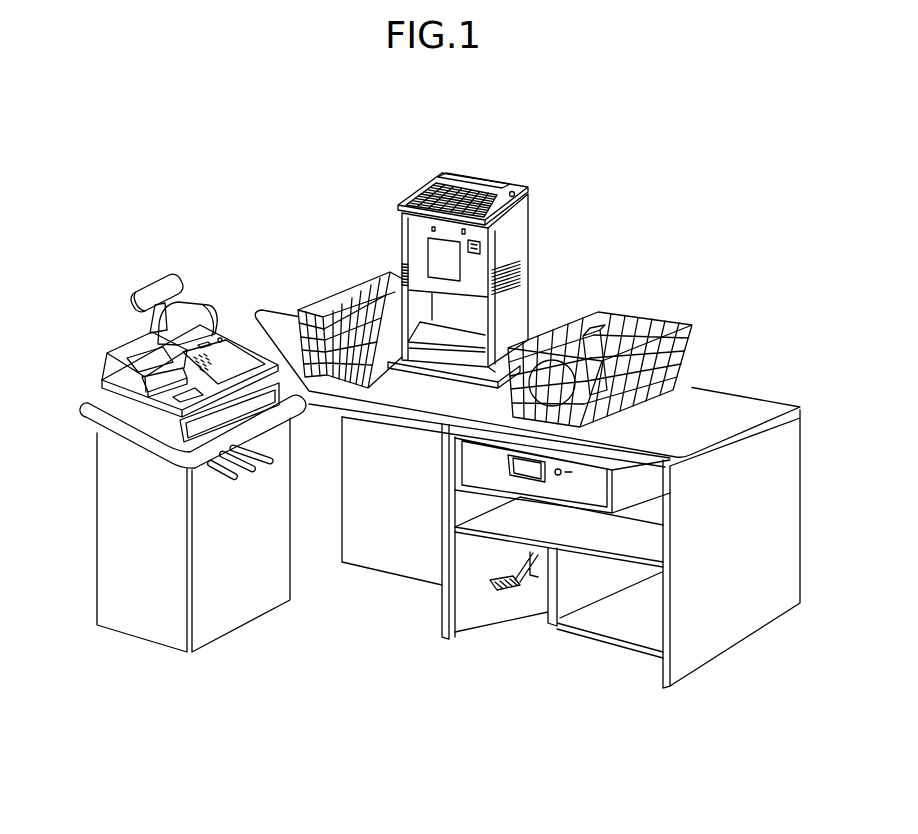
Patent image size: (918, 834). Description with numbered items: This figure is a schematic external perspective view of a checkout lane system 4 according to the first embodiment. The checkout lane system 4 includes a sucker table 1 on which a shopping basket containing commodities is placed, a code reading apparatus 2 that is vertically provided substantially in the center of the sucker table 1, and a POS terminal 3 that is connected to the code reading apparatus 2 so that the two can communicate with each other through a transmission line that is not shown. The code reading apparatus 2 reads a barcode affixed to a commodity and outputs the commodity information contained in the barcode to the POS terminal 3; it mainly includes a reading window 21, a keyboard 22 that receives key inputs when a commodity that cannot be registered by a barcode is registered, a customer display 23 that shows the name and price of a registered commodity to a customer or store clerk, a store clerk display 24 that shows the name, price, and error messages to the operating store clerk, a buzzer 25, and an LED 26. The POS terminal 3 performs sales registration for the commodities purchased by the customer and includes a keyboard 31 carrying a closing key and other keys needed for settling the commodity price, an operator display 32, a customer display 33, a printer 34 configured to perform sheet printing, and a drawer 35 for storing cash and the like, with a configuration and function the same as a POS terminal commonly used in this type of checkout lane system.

The sucker table 1 is at (791, 437).
The code reading apparatus 2 is at (522, 228).
The POS terminal 3 is at (103, 366).
The checkout lane system 4 is at (659, 150).
The reading window 21 is at (432, 252).
The keyboard 22 is at (407, 200).
The customer display 23 is at (532, 211).
The store clerk display 24 is at (458, 181).
The buzzer 25 is at (481, 250).
The LED 26 is at (513, 192).
The keyboard 31 is at (246, 357).
The operator display 32 is at (205, 317).
The customer display 33 is at (170, 272).
The printer 34 is at (133, 386).
The drawer 35 is at (205, 432).